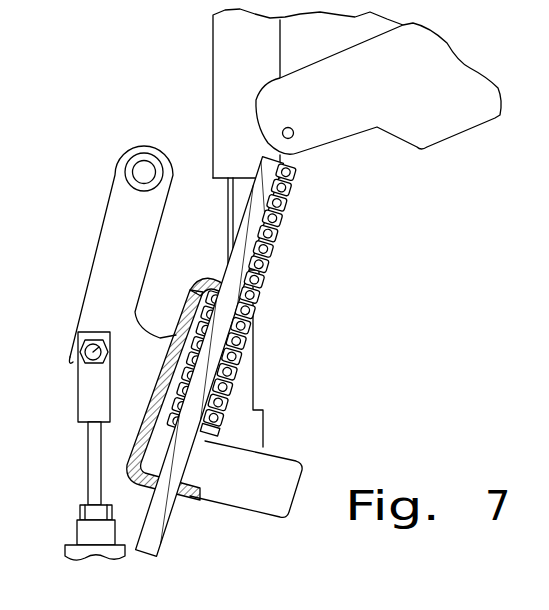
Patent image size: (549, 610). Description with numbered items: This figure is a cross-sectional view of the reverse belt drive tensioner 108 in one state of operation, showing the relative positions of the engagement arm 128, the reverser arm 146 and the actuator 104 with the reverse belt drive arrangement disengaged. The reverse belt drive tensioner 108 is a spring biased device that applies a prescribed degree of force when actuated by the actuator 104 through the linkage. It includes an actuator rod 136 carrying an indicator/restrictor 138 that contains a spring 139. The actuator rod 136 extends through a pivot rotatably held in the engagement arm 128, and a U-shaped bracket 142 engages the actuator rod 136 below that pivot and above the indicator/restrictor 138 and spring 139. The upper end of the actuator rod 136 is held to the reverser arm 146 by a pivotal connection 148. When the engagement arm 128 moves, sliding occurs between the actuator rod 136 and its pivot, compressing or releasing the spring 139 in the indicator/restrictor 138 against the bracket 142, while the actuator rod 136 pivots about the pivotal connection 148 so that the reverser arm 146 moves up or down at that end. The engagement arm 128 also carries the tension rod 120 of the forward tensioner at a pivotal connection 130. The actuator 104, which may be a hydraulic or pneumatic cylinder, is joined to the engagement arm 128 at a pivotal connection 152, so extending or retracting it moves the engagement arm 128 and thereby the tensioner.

The actuator 104 is at (225, 68).
The reverse belt drive tensioner 108 is at (122, 130).
The tension rod 120 is at (97, 463).
The engagement arm 128 is at (110, 240).
The pivotal connection 130 is at (72, 361).
The actuator rod 136 is at (157, 513).
The indicator/restrictor 138 is at (197, 360).
The spring 139 is at (253, 335).
The U-shaped bracket 142 is at (190, 290).
The reverser arm 146 is at (435, 120).
The pivotal connection 148 is at (293, 138).
The pivotal connection 152 is at (273, 438).